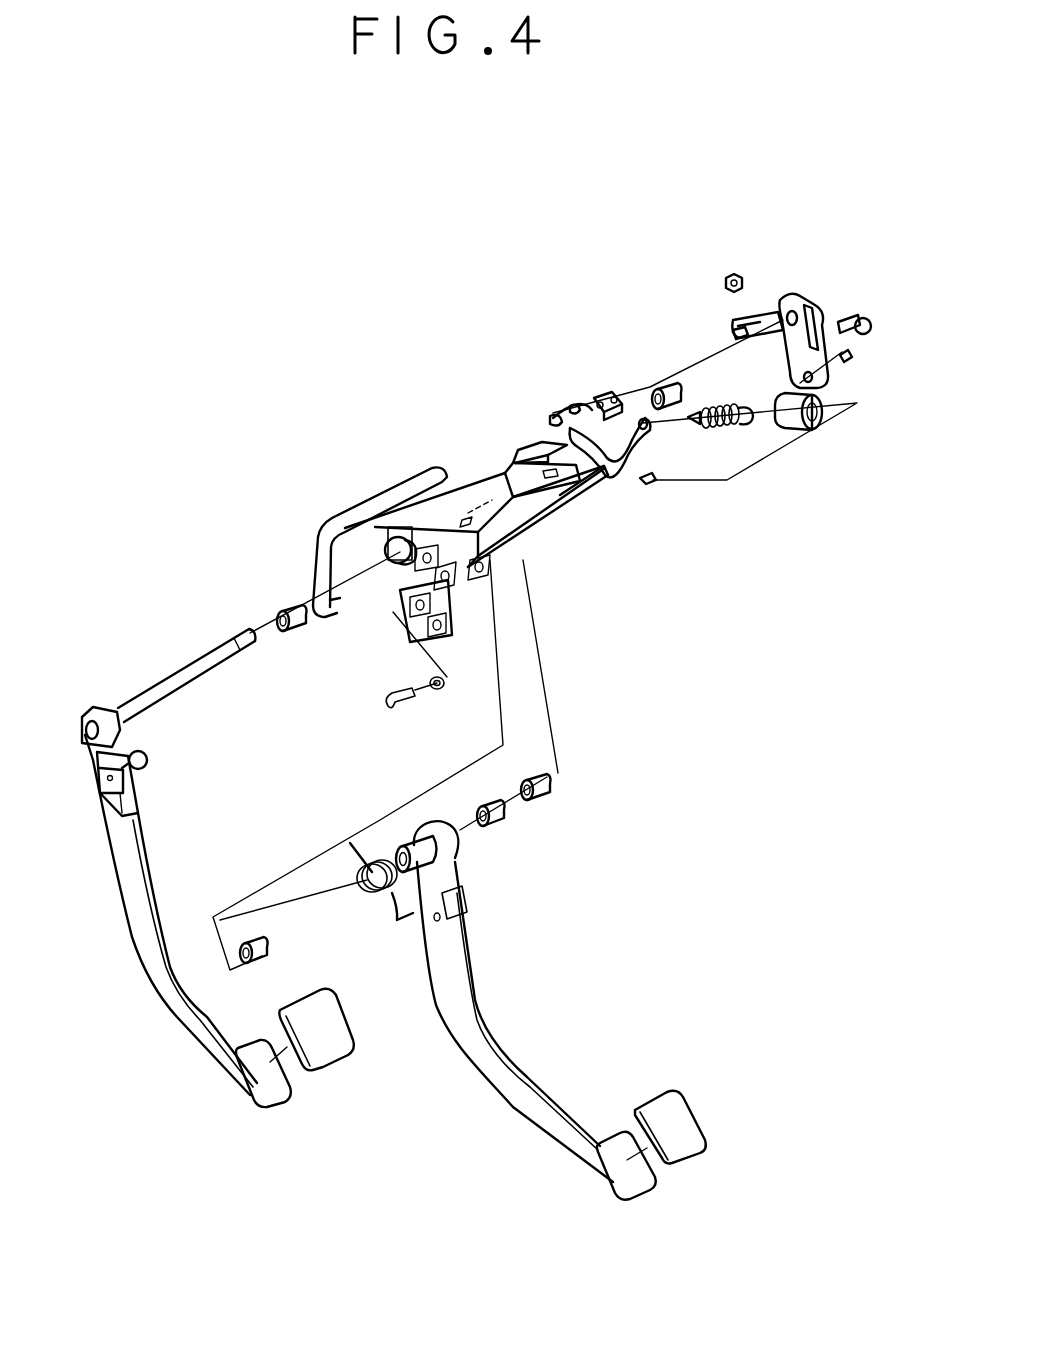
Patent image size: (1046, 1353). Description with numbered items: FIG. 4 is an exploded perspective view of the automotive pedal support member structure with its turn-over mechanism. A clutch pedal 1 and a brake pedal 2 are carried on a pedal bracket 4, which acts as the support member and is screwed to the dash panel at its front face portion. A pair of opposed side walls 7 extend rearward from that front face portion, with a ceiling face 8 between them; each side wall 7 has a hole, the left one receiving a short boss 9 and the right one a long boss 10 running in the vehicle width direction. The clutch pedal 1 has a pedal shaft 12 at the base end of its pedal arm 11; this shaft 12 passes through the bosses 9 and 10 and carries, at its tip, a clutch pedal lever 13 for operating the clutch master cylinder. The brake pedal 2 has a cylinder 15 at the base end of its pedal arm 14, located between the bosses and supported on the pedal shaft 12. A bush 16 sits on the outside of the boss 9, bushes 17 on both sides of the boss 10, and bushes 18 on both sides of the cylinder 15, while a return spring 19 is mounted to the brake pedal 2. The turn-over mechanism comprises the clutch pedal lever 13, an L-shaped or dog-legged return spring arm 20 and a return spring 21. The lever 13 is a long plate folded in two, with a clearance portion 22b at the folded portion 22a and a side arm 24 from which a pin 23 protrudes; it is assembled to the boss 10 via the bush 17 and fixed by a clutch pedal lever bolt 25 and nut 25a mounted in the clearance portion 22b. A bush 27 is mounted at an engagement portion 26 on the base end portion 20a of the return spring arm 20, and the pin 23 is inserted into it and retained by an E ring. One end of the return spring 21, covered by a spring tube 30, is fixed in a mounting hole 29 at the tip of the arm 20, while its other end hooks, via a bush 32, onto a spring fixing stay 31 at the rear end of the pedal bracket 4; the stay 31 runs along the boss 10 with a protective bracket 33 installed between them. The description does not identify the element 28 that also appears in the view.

The clutch pedal 1 is at (278, 1103).
The brake pedal 2 is at (640, 1195).
The pedal bracket 4 is at (310, 540).
The side walls 7 is at (350, 620).
The ceiling face 8 is at (400, 503).
The short boss 9 is at (395, 585).
The long boss 10 is at (490, 483).
The pedal arm 11 is at (138, 962).
The pedal shaft 12 is at (167, 683).
The clutch pedal lever 13 is at (790, 298).
The pedal arm 14 is at (510, 1110).
The cylinder 15 is at (410, 848).
The bush 16 is at (295, 636).
The bushes 17 is at (690, 393).
The bushes 18 is at (492, 828).
The return spring 19 is at (377, 905).
The return spring arm 20 is at (660, 470).
The base end portion 20a is at (548, 420).
The return spring 21 is at (735, 435).
The folded portion 22a is at (808, 302).
The clearance portion 22b is at (813, 318).
The pin 23 is at (735, 330).
The arm 24 is at (740, 320).
The clutch pedal lever bolt 25 is at (870, 332).
The nut 25a is at (733, 275).
The engagement portion 26 is at (553, 418).
The bush 27 is at (603, 390).
The grommet 28 is at (575, 403).
The mounting hole 29 is at (648, 425).
The spring tube 30 is at (810, 420).
The spring fixing stay 31 is at (510, 535).
The bush 32 is at (648, 485).
The bracket 33 is at (580, 488).